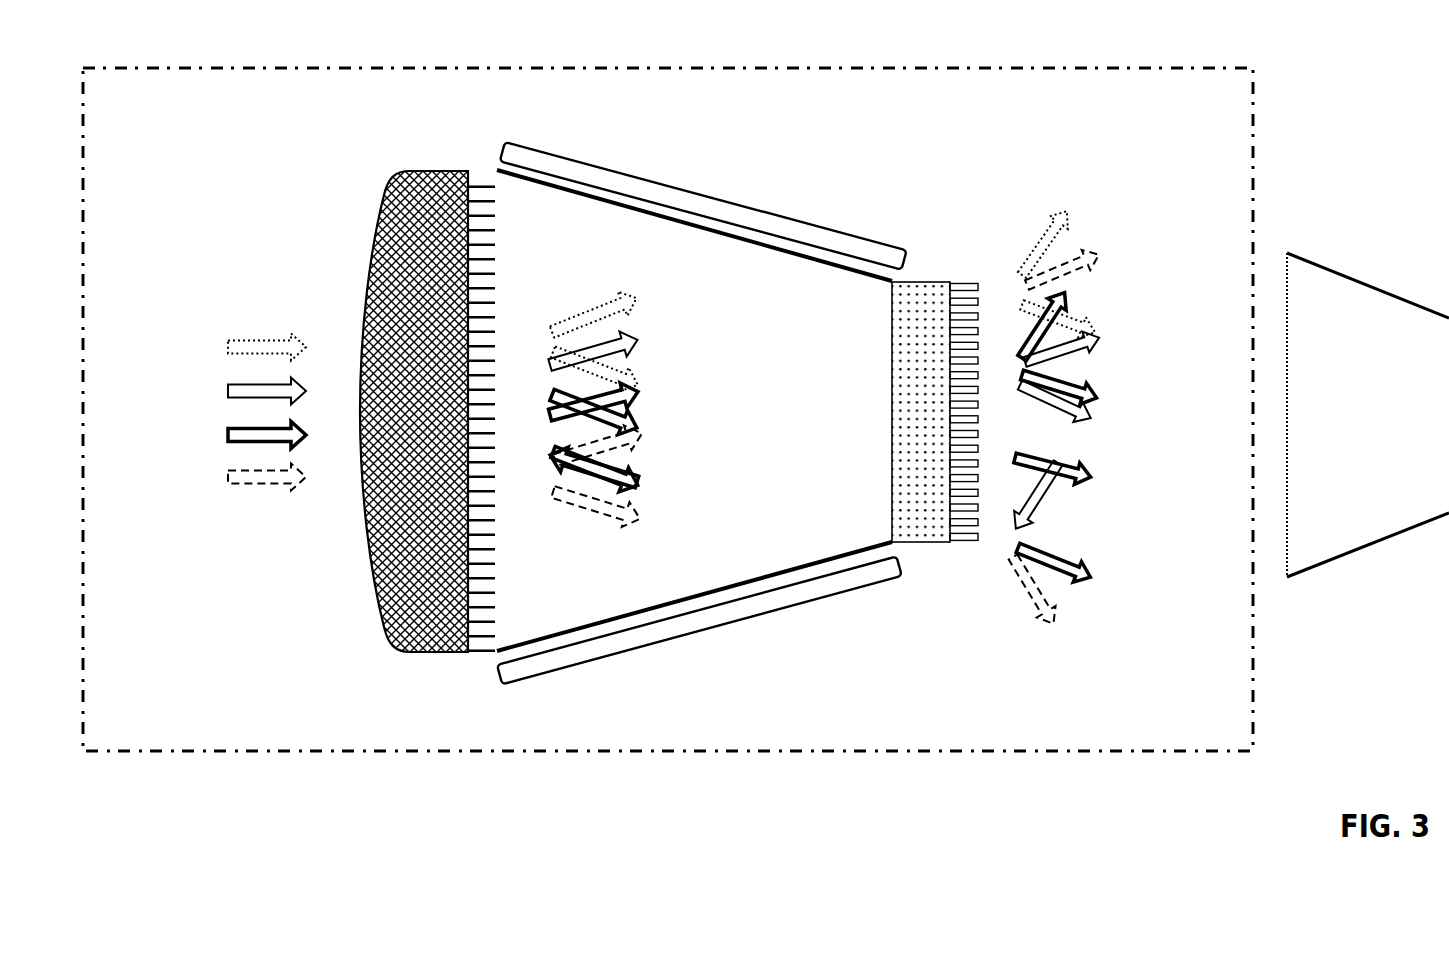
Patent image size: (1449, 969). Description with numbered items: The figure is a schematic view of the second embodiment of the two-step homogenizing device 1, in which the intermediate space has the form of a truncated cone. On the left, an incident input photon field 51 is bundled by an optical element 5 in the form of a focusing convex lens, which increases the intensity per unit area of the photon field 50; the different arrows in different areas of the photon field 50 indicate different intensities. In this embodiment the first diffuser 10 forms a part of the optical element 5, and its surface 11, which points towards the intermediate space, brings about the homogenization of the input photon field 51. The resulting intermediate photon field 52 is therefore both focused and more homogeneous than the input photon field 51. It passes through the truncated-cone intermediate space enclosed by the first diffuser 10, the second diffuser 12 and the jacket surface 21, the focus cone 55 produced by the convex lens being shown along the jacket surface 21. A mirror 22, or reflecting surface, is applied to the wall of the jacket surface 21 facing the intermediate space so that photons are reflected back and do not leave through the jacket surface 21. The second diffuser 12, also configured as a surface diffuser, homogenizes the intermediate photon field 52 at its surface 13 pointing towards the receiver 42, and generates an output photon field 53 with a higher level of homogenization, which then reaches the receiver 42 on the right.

The two-step homogenizing device 1 is at (217, 753).
The optical element 5 is at (406, 261).
The first diffuser 10 is at (385, 364).
The surface of the first diffuser 11 is at (478, 185).
The second diffuser 12 is at (908, 389).
The surface of the second diffuser 13 is at (967, 310).
The jacket surface 21 is at (709, 211).
The mirror 22 is at (726, 383).
The receiver 42 is at (1365, 281).
The photon field 50 is at (668, 370).
The input photon field 51 is at (263, 330).
The intermediate photon field 52 is at (624, 364).
The output photon field 53 is at (1087, 236).
The focus cone 55 is at (801, 246).